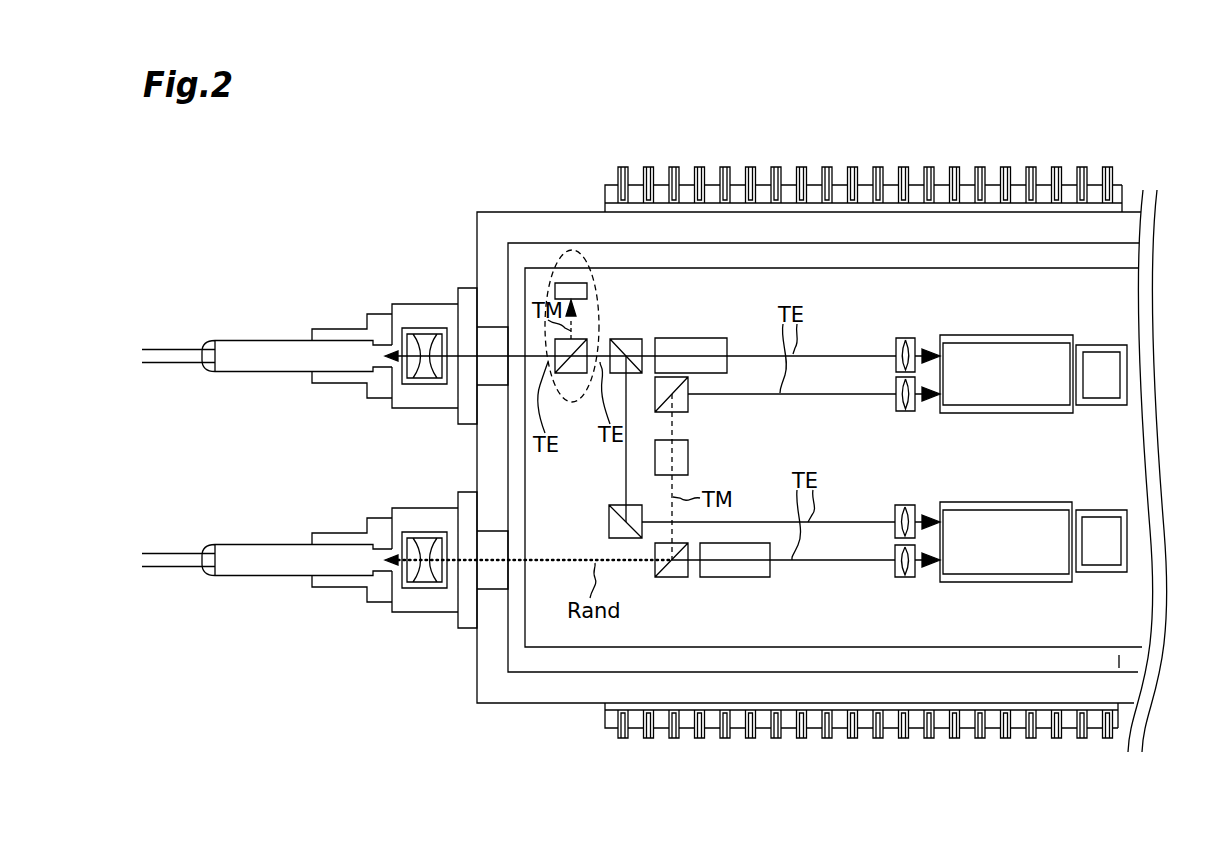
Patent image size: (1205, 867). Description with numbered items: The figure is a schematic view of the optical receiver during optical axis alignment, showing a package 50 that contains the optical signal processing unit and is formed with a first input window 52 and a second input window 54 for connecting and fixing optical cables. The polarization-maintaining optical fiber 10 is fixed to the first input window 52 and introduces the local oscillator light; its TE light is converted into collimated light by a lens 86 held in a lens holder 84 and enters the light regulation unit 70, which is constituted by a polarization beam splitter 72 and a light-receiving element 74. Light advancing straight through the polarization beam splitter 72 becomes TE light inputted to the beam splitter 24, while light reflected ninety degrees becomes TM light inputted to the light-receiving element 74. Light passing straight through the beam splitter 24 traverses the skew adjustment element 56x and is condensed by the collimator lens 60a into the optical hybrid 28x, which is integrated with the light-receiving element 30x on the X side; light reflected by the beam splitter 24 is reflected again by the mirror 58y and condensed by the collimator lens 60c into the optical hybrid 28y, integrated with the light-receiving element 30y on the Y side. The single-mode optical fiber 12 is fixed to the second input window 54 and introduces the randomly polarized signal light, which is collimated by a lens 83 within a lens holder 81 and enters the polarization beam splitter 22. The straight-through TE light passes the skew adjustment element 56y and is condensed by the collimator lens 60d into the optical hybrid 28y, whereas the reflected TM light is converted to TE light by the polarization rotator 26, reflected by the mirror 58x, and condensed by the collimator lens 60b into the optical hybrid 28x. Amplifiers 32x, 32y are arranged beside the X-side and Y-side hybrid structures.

The polarization-maintaining optical fiber 10 is at (267, 316).
The single-mode optical fiber 12 is at (267, 520).
The polarization beam splitter 22 is at (672, 578).
The beam splitter 24 is at (636, 339).
The polarization rotator 26 is at (689, 460).
The optical hybrid 28x is at (1006, 348).
The light-receiving element 30x is at (1007, 334).
The optical hybrid 28y is at (1006, 515).
The light-receiving element 30y is at (1007, 501).
The amplifier 32x is at (1098, 345).
The amplifier 32y is at (1098, 510).
The package 50 is at (563, 211).
The first input window 52 is at (464, 316).
The second input window 54 is at (464, 520).
The skew adjustment element 56x is at (698, 337).
The skew adjustment element 56y is at (735, 578).
The mirror 58x is at (690, 404).
The mirror 58y is at (612, 505).
The collimator lens 60a is at (900, 337).
The collimator lens 60b is at (902, 412).
The collimator lens 60c is at (900, 505).
The collimator lens 60d is at (900, 578).
The light regulation unit 70 is at (560, 262).
The polarization beam splitter 72 is at (575, 374).
The light-receiving element 74 is at (587, 291).
The lens holder 81 is at (394, 583).
The lens 83 is at (419, 528).
The lens holder 84 is at (394, 379).
The lens 86 is at (398, 304).